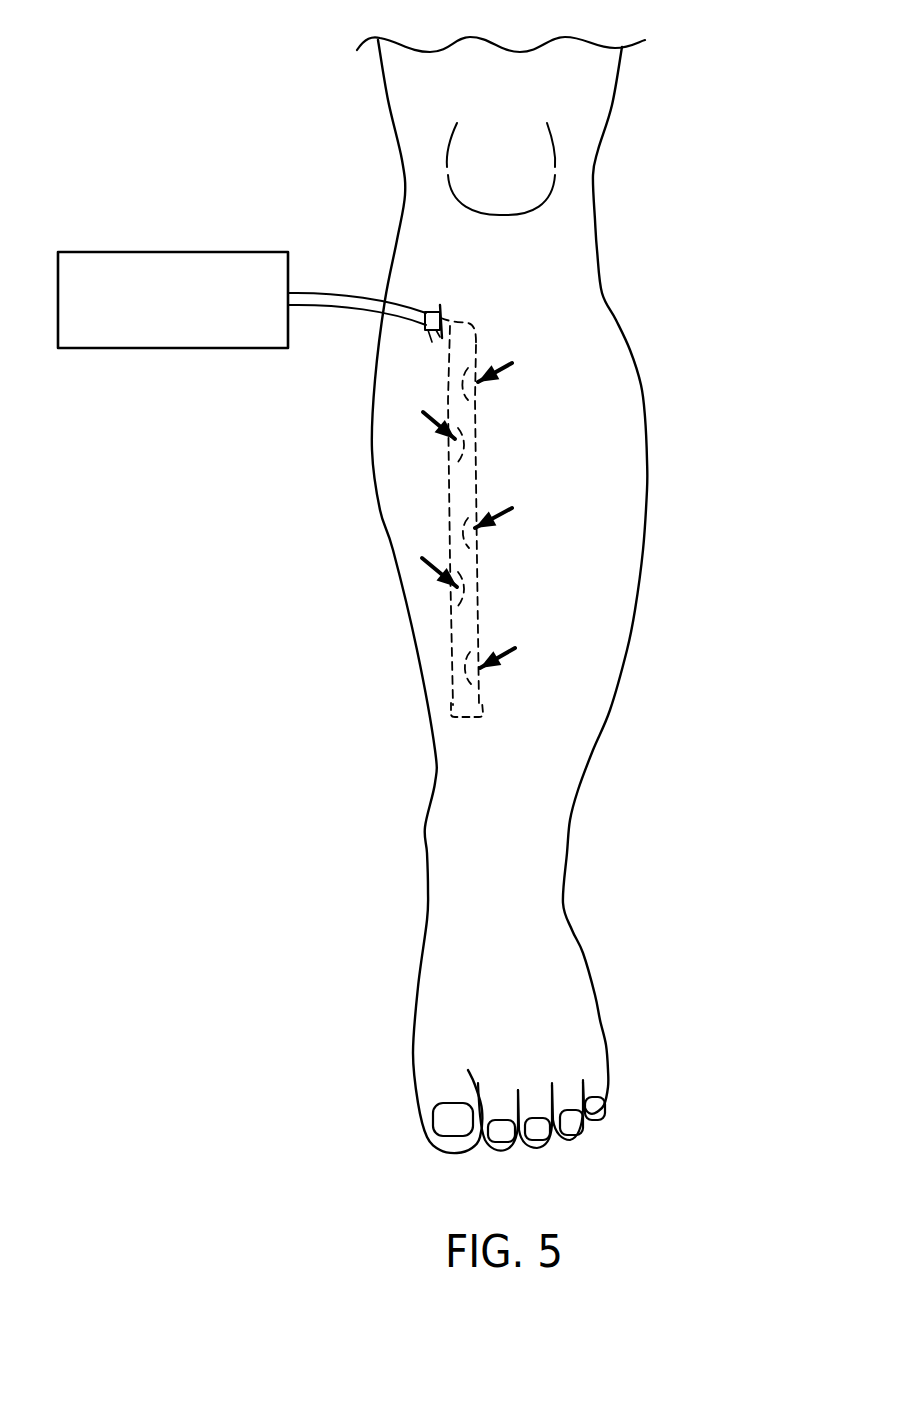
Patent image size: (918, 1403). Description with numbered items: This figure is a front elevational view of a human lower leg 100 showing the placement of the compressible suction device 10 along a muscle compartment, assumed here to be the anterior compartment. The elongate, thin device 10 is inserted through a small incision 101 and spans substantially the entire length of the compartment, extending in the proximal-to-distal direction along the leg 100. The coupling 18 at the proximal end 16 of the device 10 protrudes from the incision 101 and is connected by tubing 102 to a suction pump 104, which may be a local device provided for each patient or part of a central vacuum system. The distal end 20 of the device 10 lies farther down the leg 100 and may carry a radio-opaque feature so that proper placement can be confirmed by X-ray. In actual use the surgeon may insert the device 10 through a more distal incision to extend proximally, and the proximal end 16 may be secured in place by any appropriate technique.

The lower leg 100 is at (648, 420).
The suction pump 104 is at (248, 260).
The tubing 102 is at (345, 293).
The proximal end 16 is at (432, 303).
The coupling 18 is at (440, 338).
The incision 101 is at (432, 342).
The compressible suction device 10 is at (478, 337).
The distal end 20 is at (471, 722).